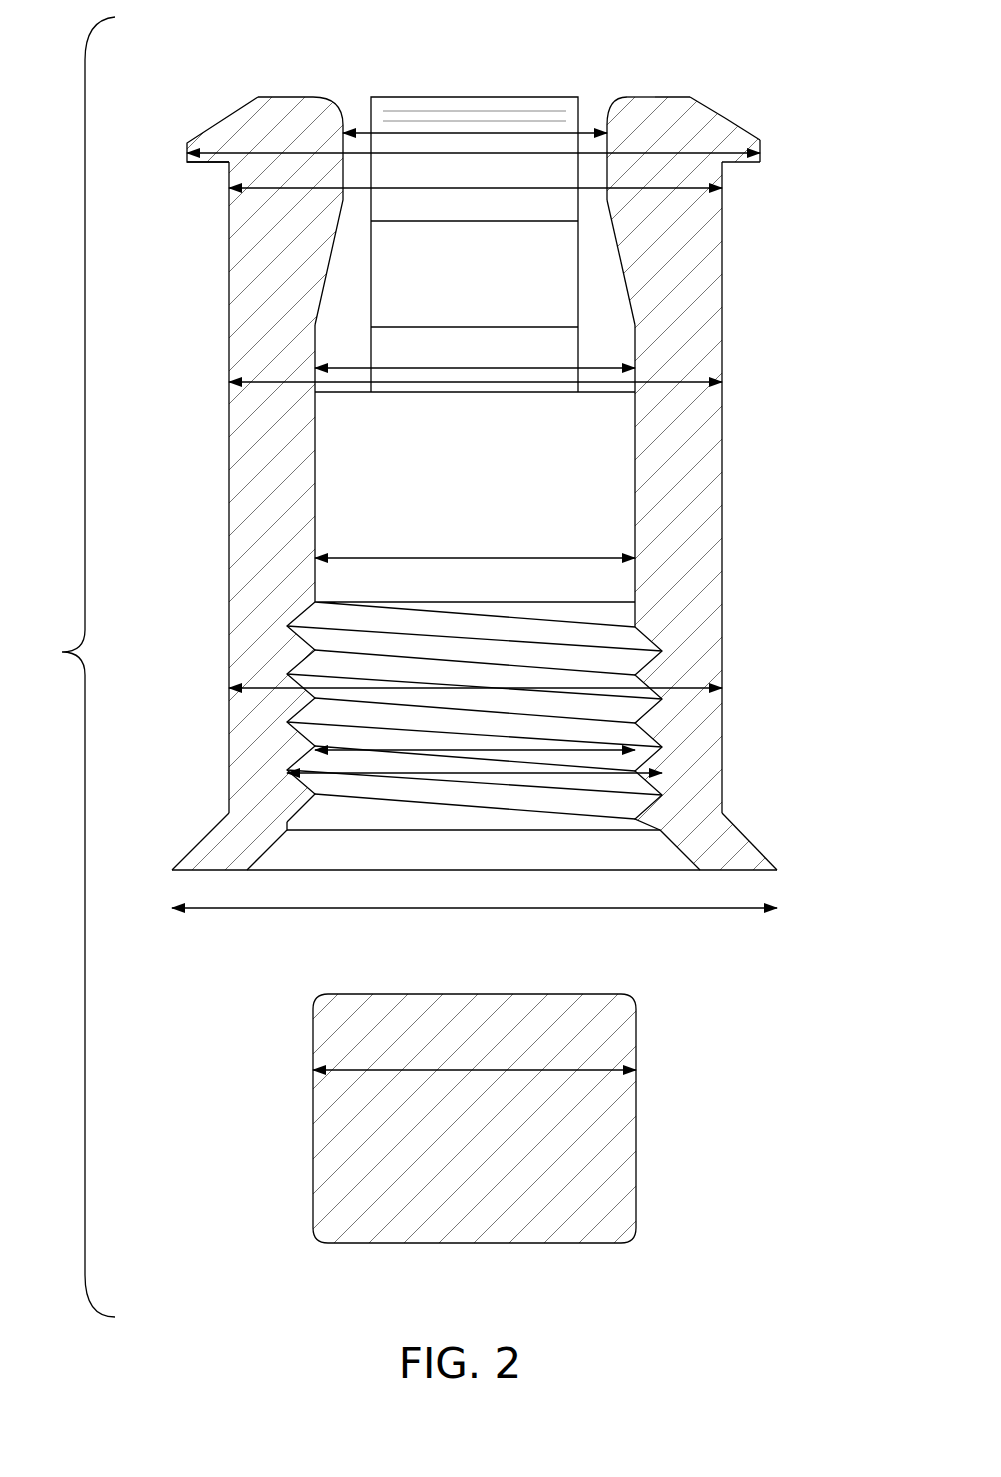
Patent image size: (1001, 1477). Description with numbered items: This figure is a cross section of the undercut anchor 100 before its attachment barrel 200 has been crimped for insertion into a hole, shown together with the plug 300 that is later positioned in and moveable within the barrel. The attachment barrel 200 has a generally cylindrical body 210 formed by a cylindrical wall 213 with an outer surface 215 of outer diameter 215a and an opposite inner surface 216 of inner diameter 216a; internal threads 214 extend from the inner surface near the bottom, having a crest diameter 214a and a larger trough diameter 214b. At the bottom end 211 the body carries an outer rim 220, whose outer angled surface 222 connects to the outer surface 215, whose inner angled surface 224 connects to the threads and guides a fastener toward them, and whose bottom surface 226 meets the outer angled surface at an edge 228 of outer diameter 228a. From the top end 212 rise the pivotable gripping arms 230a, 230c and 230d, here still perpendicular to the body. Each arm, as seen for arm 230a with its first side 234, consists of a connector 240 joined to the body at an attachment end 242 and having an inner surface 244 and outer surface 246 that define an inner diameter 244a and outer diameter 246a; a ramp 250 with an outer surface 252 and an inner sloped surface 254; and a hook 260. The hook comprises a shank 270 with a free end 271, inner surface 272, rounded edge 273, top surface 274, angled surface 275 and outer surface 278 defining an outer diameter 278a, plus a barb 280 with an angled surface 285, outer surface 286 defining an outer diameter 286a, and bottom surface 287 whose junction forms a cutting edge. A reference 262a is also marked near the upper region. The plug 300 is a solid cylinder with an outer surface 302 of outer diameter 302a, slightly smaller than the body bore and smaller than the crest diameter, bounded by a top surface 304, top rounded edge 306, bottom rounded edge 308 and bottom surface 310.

The undercut anchor 100 is at (63, 667).
The attachment barrel 200 is at (237, 72).
The body 210 is at (208, 572).
The bottom end 211 is at (267, 820).
The top end 212 is at (342, 393).
The generally cylindrical wall 213 is at (250, 618).
The internal threads 214 is at (547, 667).
The crest diameter 214a is at (568, 747).
The trough diameter 214b is at (575, 797).
The outer surface 215 is at (723, 700).
The outer diameter 215a is at (270, 687).
The inner surface 216 is at (632, 476).
The inner diameter 216a is at (455, 556).
The outer rim 220 is at (182, 838).
The outer angled surface 222 is at (752, 846).
The inner angled surface 224 is at (682, 846).
The bottom surface 226 is at (743, 871).
The edge 228 is at (174, 870).
The outer diameter 228a is at (562, 910).
The pivotable gripping arm 230a is at (724, 331).
The pivotable gripping arm 230c is at (227, 342).
The pivotable gripping arm 230d is at (390, 94).
The first side 234 is at (677, 235).
The connector 240 is at (682, 408).
The attachment end 242 is at (722, 440).
The inner surface 244 is at (575, 358).
The inner diameter 244a is at (455, 366).
The outer surface 246 is at (722, 368).
The outer diameter 246a is at (487, 384).
The ramp 250 is at (675, 272).
The outer surface 252 is at (722, 308).
The inner sloped surface 254 is at (620, 272).
The hook 260 is at (727, 110).
The insert top surface 262a is at (465, 133).
The shank 270 is at (620, 96).
The free end 271 is at (641, 113).
The inner surface 272 is at (604, 127).
The rounded edge 273 is at (606, 102).
The top surface 274 is at (670, 96).
The angled surface 275 is at (706, 108).
The outer surface 278 is at (722, 203).
The outer diameter 278a is at (255, 205).
The barb 280 is at (736, 143).
The angled surface 285 is at (750, 133).
The outer surface 286 is at (762, 162).
The outer diameter 286a is at (250, 150).
The bottom surface 287 is at (745, 165).
The plug 300 is at (642, 1108).
The outer surface 302 is at (636, 1150).
The outer diameter 302a is at (373, 1072).
The top surface 304 is at (472, 994).
The top rounded edge 306 is at (318, 998).
The bottom rounded edge 308 is at (322, 1242).
The bottom surface 310 is at (407, 1244).